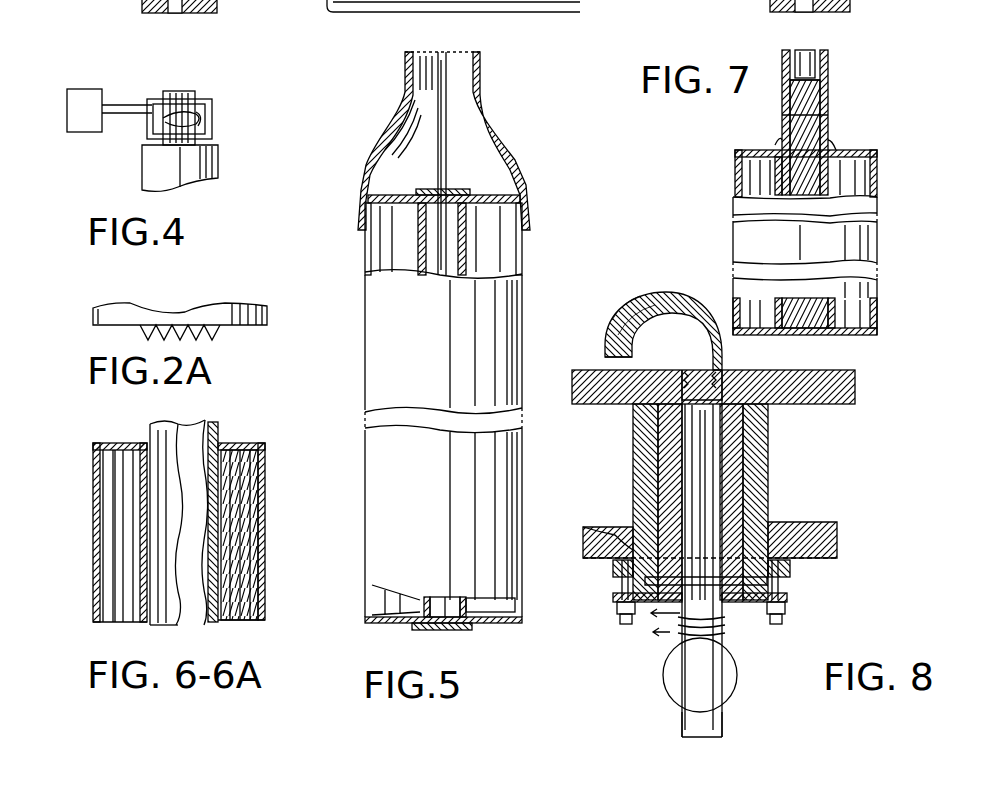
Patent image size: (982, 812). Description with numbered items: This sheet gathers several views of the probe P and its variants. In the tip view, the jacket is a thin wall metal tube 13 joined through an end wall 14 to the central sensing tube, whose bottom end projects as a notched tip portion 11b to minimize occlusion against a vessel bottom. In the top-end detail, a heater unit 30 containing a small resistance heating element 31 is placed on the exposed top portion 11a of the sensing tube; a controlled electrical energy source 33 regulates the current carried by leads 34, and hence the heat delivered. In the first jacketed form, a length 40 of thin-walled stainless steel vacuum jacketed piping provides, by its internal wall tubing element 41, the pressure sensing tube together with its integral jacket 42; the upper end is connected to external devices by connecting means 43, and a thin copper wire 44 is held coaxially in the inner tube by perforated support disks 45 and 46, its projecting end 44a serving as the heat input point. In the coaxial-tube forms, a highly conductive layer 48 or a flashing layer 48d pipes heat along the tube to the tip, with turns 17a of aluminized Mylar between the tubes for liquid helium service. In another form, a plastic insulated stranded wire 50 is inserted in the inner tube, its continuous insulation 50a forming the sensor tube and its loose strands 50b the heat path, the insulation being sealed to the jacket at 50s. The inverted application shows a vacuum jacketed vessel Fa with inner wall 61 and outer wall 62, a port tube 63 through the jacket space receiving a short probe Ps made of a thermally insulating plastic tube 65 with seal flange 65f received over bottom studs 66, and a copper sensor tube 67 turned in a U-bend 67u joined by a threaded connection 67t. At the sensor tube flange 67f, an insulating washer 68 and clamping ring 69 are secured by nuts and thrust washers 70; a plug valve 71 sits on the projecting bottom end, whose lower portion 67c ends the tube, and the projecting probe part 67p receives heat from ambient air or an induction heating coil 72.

In FIG. 4, the residual top portion of sensing tube 11a is at (197, 98).
In FIG. 4, the tip portion 11b is at (172, 12).
In FIG. 2A, the tip portion 11b is at (140, 331).
In FIG. 7, the tip portion 11b is at (790, 8).
In FIG. 4, the thin wall metal tube 13 is at (225, 177).
In FIG. 2A, the thin wall metal tube 13 is at (270, 301).
In FIG. 4, the top end wall 14 is at (212, 12).
In FIG. 6-6A, the turns of aluminized Mylar 17a is at (245, 590).
In FIG. 4, the heater unit 30 is at (152, 99).
In FIG. 4, the resistance heating element 31 is at (207, 118).
In FIG. 4, the electrical energy source 33 is at (88, 133).
In FIG. 4, the leads 34 is at (133, 116).
In FIG. 6-6A, the vacuum jacketed piping 40 is at (86, 501).
In FIG. 5, the vacuum jacketed piping 40 is at (357, 348).
In FIG. 7, the vacuum jacketed piping 40 is at (915, 192).
In FIG. 6-6A, the internal wall tubing element 41 is at (140, 537).
In FIG. 5, the internal wall tubing element 41 is at (420, 250).
In FIG. 7, the internal wall tubing element 41 is at (830, 175).
In FIG. 6-6A, the integral jacket 42 is at (93, 583).
In FIG. 5, the integral jacket 42 is at (365, 243).
In FIG. 5, the connecting means 43 is at (365, 155).
In FIG. 5, the thin copper wire 44 is at (448, 255).
In FIG. 5, the upwardly projecting wire end 44a is at (415, 95).
In FIG. 5, the perforated support disk 45 is at (410, 626).
In FIG. 5, the perforated support disk 46 is at (462, 195).
In FIG. 6-6A, the layer of highly conductive material 48 is at (165, 450).
In FIG. 6-6A, the flashing layer 48d is at (212, 445).
In FIG. 7, the plastic insulated stranded wire 50 is at (777, 114).
In FIG. 7, the continuous plastic insulation 50a is at (830, 140).
In FIG. 7, the loose strands 50b is at (812, 135).
In FIG. 7, the circumferential seal 50s is at (772, 145).
In FIG. 8, the inner wall 61 is at (828, 403).
In FIG. 8, the outer wall 62 is at (838, 510).
In FIG. 8, the port tube 63 is at (636, 422).
In FIG. 8, the thermally insulating plastic tube 65 is at (660, 445).
In FIG. 8, the outer end seal flange 65f is at (790, 567).
In FIG. 8, the bottom studs 66 is at (790, 594).
In FIG. 8, the sensor tube 67 is at (690, 455).
In FIG. 8, the pipe end 67c is at (686, 715).
In FIG. 8, the sensor tube flange 67f is at (620, 533).
In FIG. 8, the projecting probe part 67p is at (708, 622).
In FIG. 8, the threaded connection 67t is at (722, 372).
In FIG. 8, the U-bend 67u is at (655, 297).
In FIG. 8, the thermally insulating washer 68 is at (613, 585).
In FIG. 8, the clamping ring 69 is at (612, 607).
In FIG. 8, the nuts and thrust washers 70 is at (787, 608).
In FIG. 8, the plug valve 71 is at (665, 668).
In FIG. 8, the induction heating coil 72 is at (655, 637).
In FIG. 6-6A, the probe P is at (92, 440).
In FIG. 5, the probe P is at (548, 200).
In FIG. 7, the probe P is at (712, 196).
In FIG. 8, the short form probe Ps is at (608, 304).
In FIG. 8, the vacuum jacketed vessel Fa is at (578, 366).